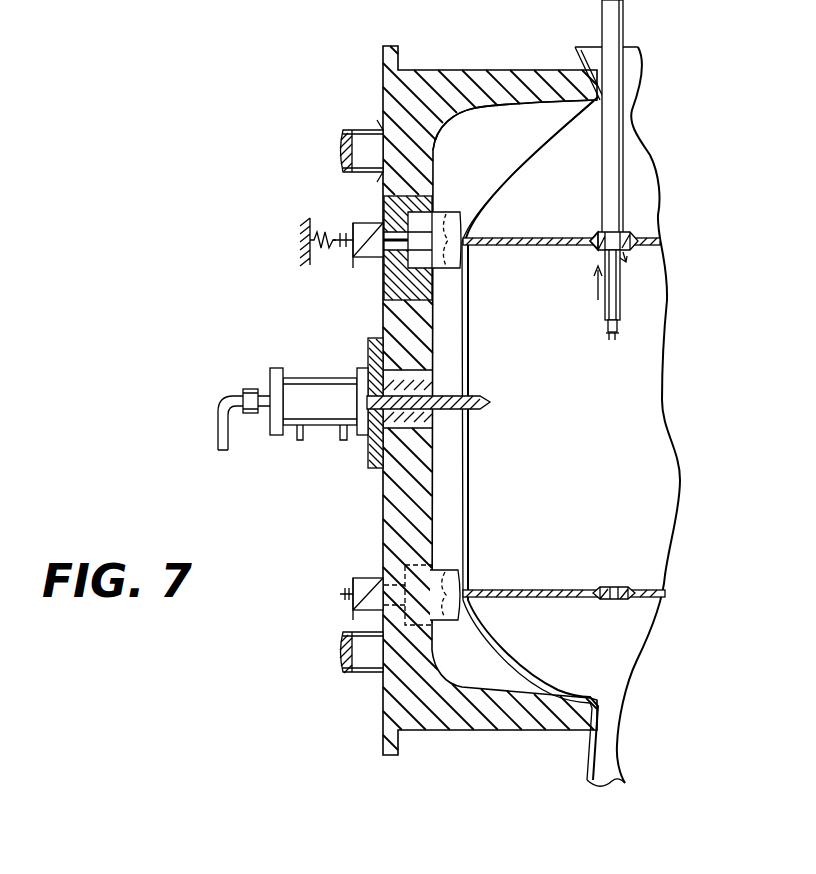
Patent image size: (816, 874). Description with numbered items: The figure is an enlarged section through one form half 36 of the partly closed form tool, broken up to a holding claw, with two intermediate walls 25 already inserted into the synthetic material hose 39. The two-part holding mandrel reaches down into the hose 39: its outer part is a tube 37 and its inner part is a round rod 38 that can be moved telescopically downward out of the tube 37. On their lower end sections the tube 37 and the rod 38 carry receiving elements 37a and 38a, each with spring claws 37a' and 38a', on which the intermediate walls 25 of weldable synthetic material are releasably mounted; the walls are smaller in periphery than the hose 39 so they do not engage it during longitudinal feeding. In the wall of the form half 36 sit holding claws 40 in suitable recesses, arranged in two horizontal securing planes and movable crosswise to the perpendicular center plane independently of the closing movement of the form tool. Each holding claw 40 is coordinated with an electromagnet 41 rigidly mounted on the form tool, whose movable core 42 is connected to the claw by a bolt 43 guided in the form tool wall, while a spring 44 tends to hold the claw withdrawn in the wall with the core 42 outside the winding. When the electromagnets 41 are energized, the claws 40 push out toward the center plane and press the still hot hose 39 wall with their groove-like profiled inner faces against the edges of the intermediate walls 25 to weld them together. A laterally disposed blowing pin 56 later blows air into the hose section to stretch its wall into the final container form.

The intermediate wall 25 is at (553, 250).
The form half 36 is at (405, 703).
The tube 37 is at (615, 45).
The receiving element 37a is at (658, 223).
The spring claw 37a' is at (580, 227).
The round rod 38 is at (618, 286).
The receiving element 38a is at (662, 337).
The spring claw 38a' is at (587, 359).
The hose 39 is at (466, 498).
The holding claw 40 is at (440, 212).
The electromagnet 41 is at (365, 252).
The movable core 42 is at (343, 232).
The bolt 43 is at (430, 165).
The spring 44 is at (323, 235).
The blowing pin 56 is at (330, 400).